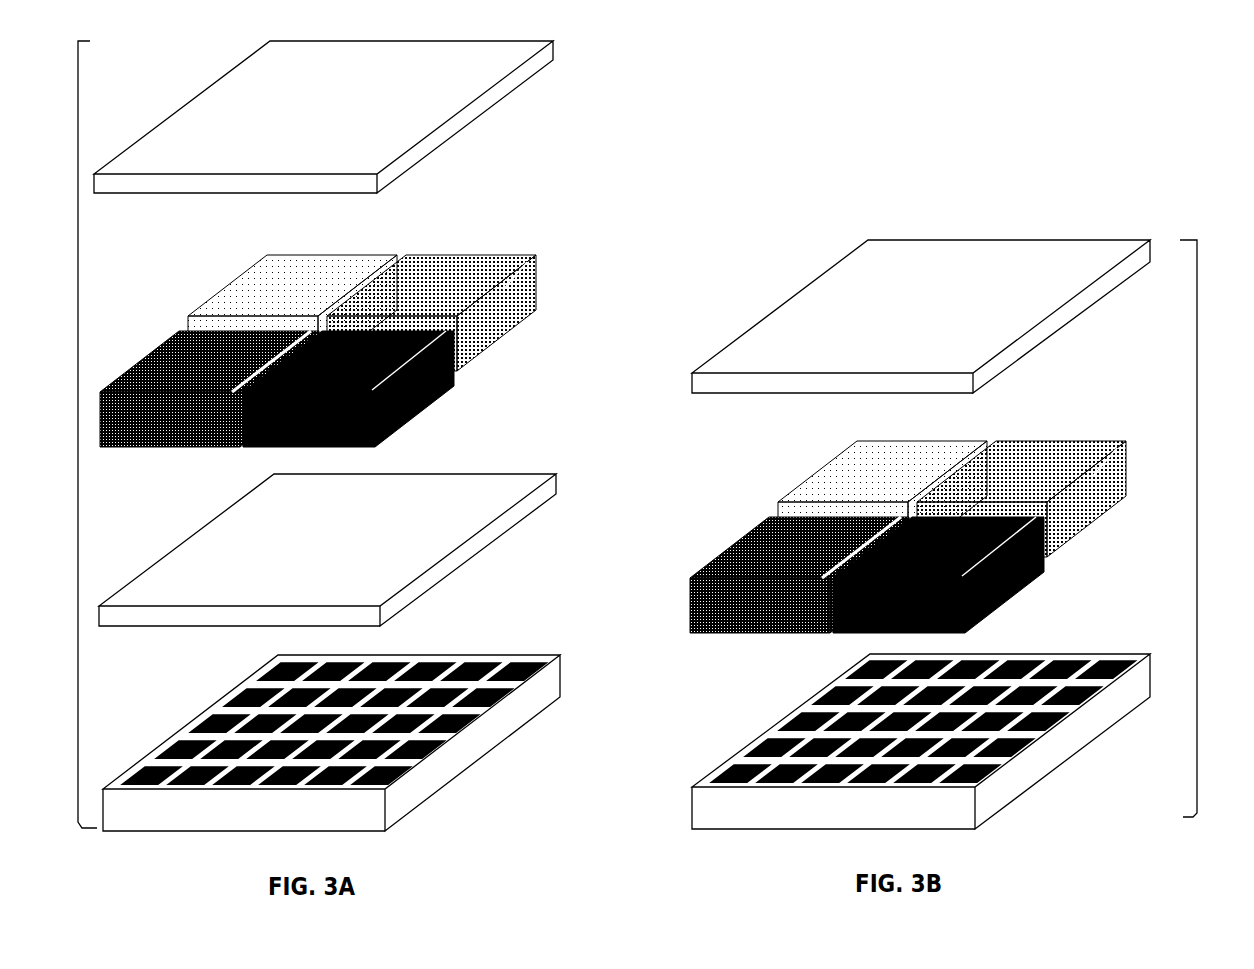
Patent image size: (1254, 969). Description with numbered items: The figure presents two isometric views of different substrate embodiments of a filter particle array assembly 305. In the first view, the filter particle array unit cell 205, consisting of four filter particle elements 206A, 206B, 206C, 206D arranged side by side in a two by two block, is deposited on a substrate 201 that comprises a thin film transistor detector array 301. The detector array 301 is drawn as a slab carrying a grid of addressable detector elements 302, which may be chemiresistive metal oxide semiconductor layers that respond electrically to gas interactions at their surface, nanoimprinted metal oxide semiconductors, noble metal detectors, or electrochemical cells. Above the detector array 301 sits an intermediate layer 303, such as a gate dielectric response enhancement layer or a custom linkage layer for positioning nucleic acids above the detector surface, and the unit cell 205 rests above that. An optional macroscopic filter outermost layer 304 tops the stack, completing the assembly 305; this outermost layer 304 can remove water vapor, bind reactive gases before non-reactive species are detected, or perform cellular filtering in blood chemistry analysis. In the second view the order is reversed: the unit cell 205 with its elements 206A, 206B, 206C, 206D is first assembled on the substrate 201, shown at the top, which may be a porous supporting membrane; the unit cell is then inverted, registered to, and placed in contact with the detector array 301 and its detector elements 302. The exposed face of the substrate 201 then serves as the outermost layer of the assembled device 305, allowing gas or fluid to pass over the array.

In FIG. 3B, the substrate 201 is at (1068, 315).
In FIG. 3A, the filter particle array unit cell 205 is at (341, 347).
In FIG. 3B, the filter particle array unit cell 205 is at (903, 533).
In FIG. 3A, the filter particle element 206A is at (250, 287).
In FIG. 3B, the filter particle element 206A is at (840, 473).
In FIG. 3A, the filter particle element 206B is at (507, 318).
In FIG. 3B, the filter particle element 206B is at (1067, 512).
In FIG. 3A, the filter particle element 206C is at (167, 347).
In FIG. 3B, the filter particle element 206C is at (730, 560).
In FIG. 3A, the filter particle element 206D is at (432, 403).
In FIG. 3B, the filter particle element 206D is at (1018, 587).
In FIG. 3A, the thin film transistor detector array 301 is at (382, 743).
In FIG. 3B, the thin film transistor detector array 301 is at (921, 741).
In FIG. 3A, the addressable detector elements 302 is at (543, 670).
In FIG. 3B, the addressable detector elements 302 is at (857, 667).
In FIG. 3A, the intermediate layer 303 is at (463, 555).
In FIG. 3A, the macroscopic filter outermost layer 304 is at (483, 108).
In FIG. 3A, the filter particle array assembly 305 is at (78, 434).
In FIG. 3B, the filter particle array assembly 305 is at (1247, 541).